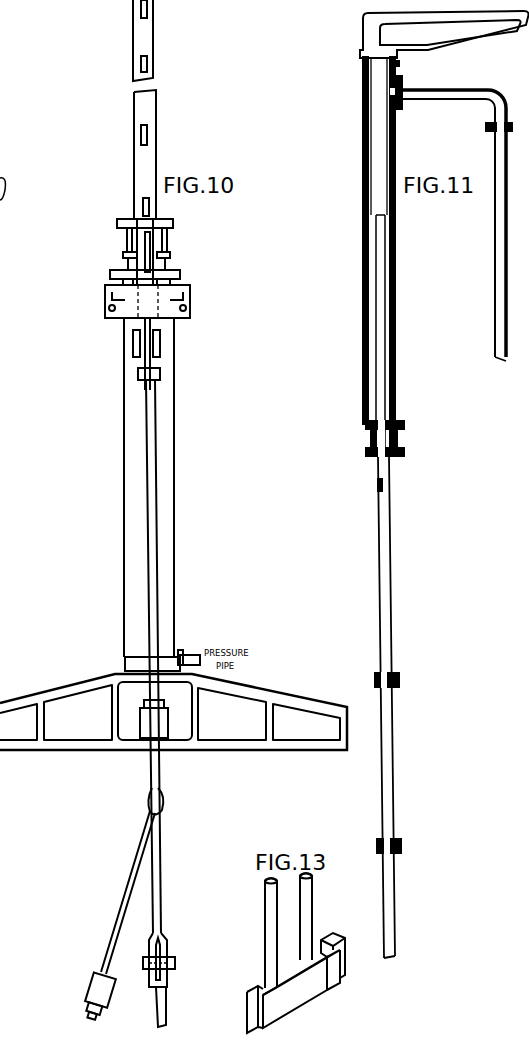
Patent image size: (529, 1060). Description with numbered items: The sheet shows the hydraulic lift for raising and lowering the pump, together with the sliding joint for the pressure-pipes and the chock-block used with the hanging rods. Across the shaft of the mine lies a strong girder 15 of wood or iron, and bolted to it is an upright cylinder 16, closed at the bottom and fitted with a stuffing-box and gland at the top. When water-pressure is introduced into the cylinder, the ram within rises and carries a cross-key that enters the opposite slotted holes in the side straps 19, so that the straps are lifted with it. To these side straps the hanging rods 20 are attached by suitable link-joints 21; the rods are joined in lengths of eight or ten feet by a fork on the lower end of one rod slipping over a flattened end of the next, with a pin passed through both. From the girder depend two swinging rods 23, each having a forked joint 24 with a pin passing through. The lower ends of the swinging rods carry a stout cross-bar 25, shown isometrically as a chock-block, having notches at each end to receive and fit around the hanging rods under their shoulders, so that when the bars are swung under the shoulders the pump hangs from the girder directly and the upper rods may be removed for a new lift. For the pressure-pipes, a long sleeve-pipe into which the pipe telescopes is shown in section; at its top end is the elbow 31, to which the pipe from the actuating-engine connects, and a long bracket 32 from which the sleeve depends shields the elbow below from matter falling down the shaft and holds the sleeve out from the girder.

In FIG. 10, the side straps 19 is at (140, 105).
In FIG. 10, the link-joints 21 is at (160, 362).
In FIG. 10, the upright cylinder 16 is at (173, 656).
In FIG. 10, the girder 15 is at (173, 712).
In FIG. 10, the forked joint 24 is at (149, 797).
In FIG. 10, the swinging rods 23 is at (128, 900).
In FIG. 10, the cross-bar 25 is at (105, 997).
In FIG. 13, the cross-bar 25 is at (296, 953).
In FIG. 10, the hanging rods 20 is at (162, 995).
In FIG. 11, the long brackets 32 is at (444, 34).
In FIG. 11, the elbow 31 is at (428, 98).